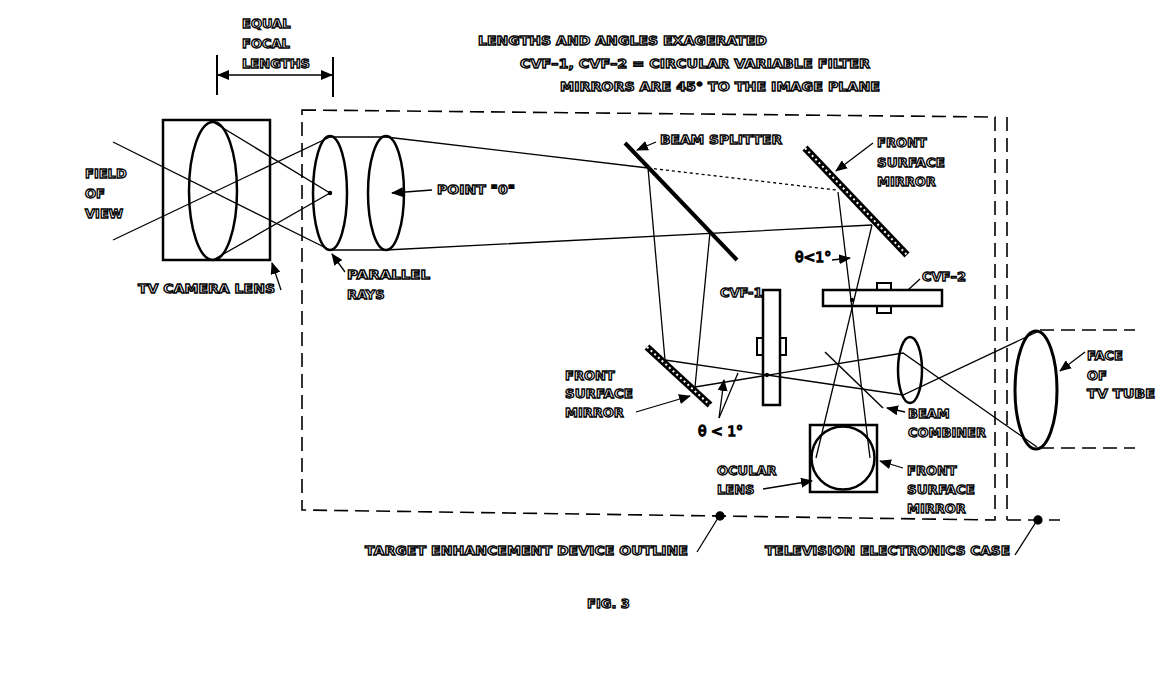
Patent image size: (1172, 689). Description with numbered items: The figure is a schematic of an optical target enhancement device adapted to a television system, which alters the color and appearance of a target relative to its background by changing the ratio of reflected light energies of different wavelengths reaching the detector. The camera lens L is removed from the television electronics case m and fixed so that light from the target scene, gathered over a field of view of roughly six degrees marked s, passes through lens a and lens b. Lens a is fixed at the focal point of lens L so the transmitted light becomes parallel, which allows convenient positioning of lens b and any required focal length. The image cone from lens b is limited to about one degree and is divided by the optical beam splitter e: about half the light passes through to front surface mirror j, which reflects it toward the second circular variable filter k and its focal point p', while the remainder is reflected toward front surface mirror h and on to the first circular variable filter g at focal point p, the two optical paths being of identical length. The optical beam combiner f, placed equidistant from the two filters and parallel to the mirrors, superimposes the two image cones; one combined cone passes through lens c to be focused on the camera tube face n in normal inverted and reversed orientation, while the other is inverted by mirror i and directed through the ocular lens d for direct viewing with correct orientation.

The camera lens L is at (216, 180).
The field of view angle s is at (221, 193).
The lens a is at (330, 185).
The lens b is at (386, 185).
The optical beam splitter e is at (681, 201).
The front surface mirror h is at (673, 370).
The front surface mirror j is at (849, 201).
The front surface mirror g is at (775, 345).
The focal point p is at (771, 384).
The circular variable filter CVF-2 k is at (882, 293).
The focal point p' is at (861, 313).
The lens c is at (910, 364).
The optical beam combiner f is at (849, 374).
The ocular lens d is at (843, 458).
The mirror i is at (847, 463).
The camera tube face n is at (1075, 389).
The television electronics case m is at (1042, 323).